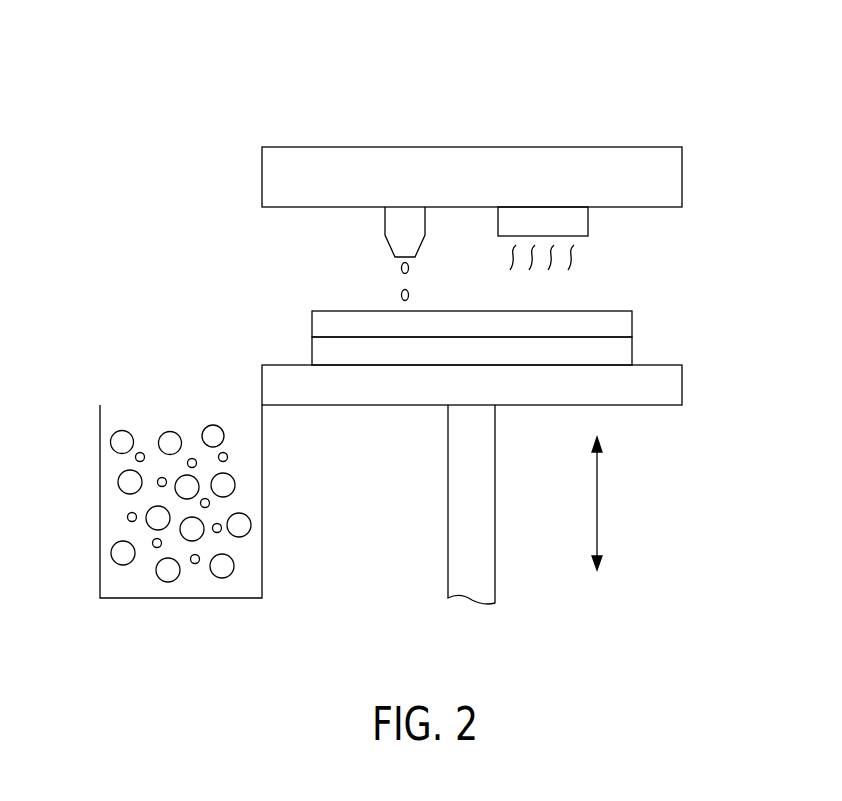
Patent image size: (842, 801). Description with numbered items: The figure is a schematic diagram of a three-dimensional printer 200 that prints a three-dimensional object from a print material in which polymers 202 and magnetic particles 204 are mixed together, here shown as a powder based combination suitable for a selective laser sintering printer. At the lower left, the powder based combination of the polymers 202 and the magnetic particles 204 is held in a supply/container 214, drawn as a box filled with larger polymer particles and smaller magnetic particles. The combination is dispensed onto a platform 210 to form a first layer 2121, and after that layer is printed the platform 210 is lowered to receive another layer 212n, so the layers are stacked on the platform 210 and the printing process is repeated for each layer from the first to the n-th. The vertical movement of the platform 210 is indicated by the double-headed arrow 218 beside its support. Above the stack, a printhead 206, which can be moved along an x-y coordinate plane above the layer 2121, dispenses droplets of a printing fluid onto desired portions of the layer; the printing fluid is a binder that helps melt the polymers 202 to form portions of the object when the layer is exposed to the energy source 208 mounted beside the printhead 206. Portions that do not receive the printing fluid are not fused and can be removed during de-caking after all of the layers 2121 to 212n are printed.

The 3D printer 200 is at (683, 97).
The polymers 202 is at (111, 440).
The magnetic particles 204 is at (143, 453).
The printhead 206 is at (385, 235).
The energy source 208 is at (588, 222).
The platform 210 is at (672, 385).
The layer 212n is at (622, 323).
The layer 2121 is at (622, 352).
The supply/container 214 is at (262, 585).
The arrow 218 is at (597, 500).